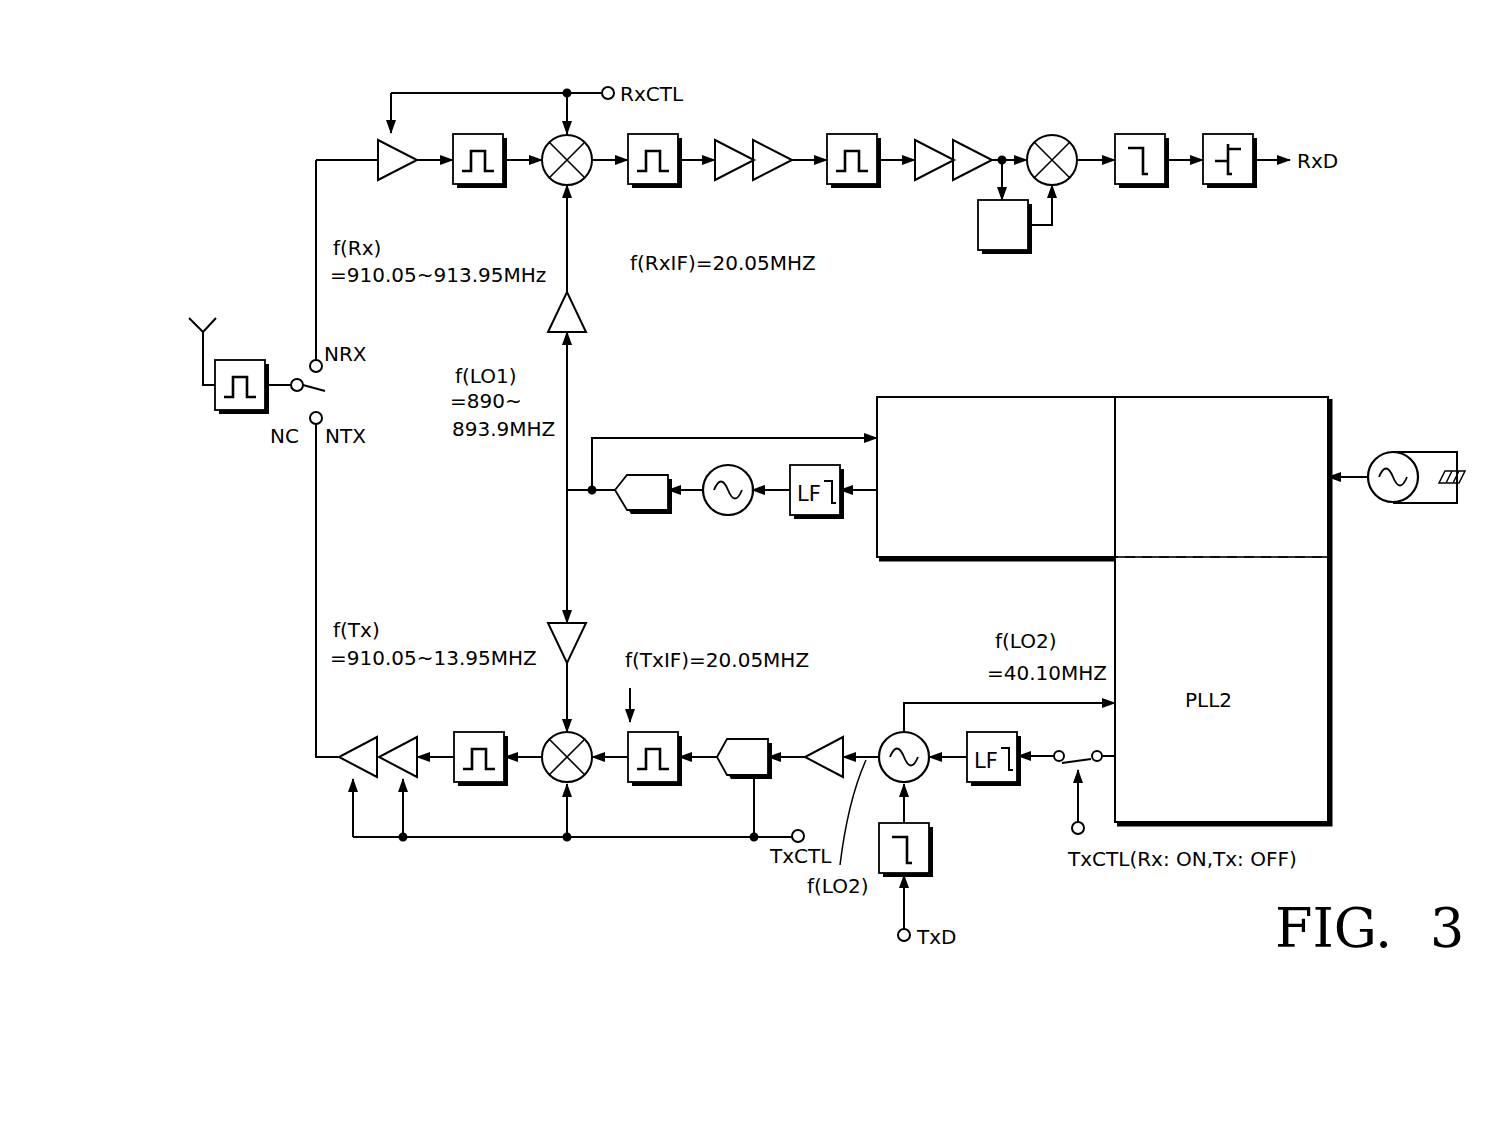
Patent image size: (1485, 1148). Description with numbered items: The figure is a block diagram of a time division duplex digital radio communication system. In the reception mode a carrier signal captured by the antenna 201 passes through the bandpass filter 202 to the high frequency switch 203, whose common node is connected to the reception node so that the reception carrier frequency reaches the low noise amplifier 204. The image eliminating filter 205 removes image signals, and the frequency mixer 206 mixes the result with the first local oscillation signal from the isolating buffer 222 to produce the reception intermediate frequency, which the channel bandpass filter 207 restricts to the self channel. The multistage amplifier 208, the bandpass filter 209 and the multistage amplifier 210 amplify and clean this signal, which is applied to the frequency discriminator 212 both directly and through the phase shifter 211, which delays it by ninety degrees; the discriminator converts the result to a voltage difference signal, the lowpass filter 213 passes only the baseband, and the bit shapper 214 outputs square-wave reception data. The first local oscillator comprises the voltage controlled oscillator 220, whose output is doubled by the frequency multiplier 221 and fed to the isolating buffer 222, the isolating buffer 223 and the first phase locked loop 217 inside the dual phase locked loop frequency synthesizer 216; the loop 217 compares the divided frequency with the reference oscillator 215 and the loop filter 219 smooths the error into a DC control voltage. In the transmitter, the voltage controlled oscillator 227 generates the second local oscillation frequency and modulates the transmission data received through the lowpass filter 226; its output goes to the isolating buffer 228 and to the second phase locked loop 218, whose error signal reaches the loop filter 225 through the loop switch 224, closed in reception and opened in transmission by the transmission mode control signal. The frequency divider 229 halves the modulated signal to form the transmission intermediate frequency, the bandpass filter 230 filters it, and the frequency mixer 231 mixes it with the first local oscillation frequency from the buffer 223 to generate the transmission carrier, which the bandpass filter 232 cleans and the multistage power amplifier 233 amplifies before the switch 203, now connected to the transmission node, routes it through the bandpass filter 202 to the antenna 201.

The antenna 201 is at (195, 326).
The bandpass filter 202 is at (238, 360).
The high frequency switch 203 is at (325, 391).
The low noise amplifier 204 is at (380, 145).
The image eliminating filter 205 is at (478, 189).
The frequency mixer 206 is at (582, 178).
The channel bandpass filter 207 is at (678, 189).
The multistage amplifier 208 is at (728, 148).
The bandpass filter 209 is at (850, 133).
The multistage amplifier 210 is at (930, 148).
The phase shifter 211 is at (978, 225).
The frequency discriminator 212 is at (1050, 135).
The lowpass filter 213 is at (1140, 133).
The bit shapper 214 is at (1226, 133).
The reference oscillator 215 is at (1390, 452).
The dual phase locked loop frequency synthesizer 216 is at (1226, 397).
The first phase locked loop 217 is at (948, 397).
The second phase locked loop 218 is at (1330, 677).
The loop filter 219 is at (818, 520).
The voltage controlled oscillator 220 is at (705, 508).
The frequency multiplier 221 is at (630, 512).
The isolating buffer 222 is at (547, 322).
The isolating buffer 223 is at (550, 632).
The loop switch 224 is at (1045, 748).
The loop filter 225 is at (994, 782).
The lowpass filter 226 is at (932, 851).
The voltage controlled oscillator 227 is at (890, 735).
The isolating buffer 228 is at (827, 742).
The frequency divider 229 is at (746, 739).
The bandpass filter 230 is at (668, 730).
The frequency mixer 231 is at (548, 740).
The bandpass filter 232 is at (477, 730).
The multistage power amplifier 233 is at (393, 748).